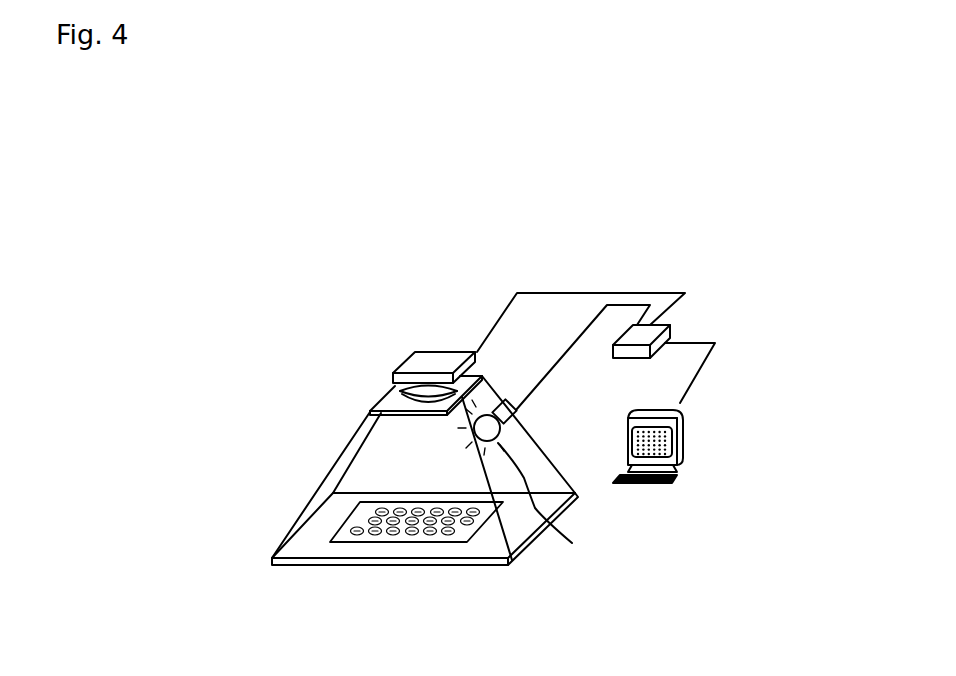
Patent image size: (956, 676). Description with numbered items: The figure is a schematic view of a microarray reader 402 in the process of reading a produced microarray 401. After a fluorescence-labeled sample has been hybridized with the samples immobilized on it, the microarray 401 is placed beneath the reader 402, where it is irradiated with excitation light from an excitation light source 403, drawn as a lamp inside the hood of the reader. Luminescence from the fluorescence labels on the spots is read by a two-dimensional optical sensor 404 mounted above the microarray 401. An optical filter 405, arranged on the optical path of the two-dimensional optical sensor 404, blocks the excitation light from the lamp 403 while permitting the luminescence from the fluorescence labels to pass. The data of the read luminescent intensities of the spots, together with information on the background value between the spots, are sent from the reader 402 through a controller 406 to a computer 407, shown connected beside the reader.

The microarray 401 is at (390, 542).
The microarray reader 402 is at (575, 241).
The excitation light source 403 is at (544, 483).
The two-dimensional optical sensor 404 is at (418, 363).
The optical filter 405 is at (390, 400).
The controller 406 is at (650, 333).
The computer 407 is at (682, 443).